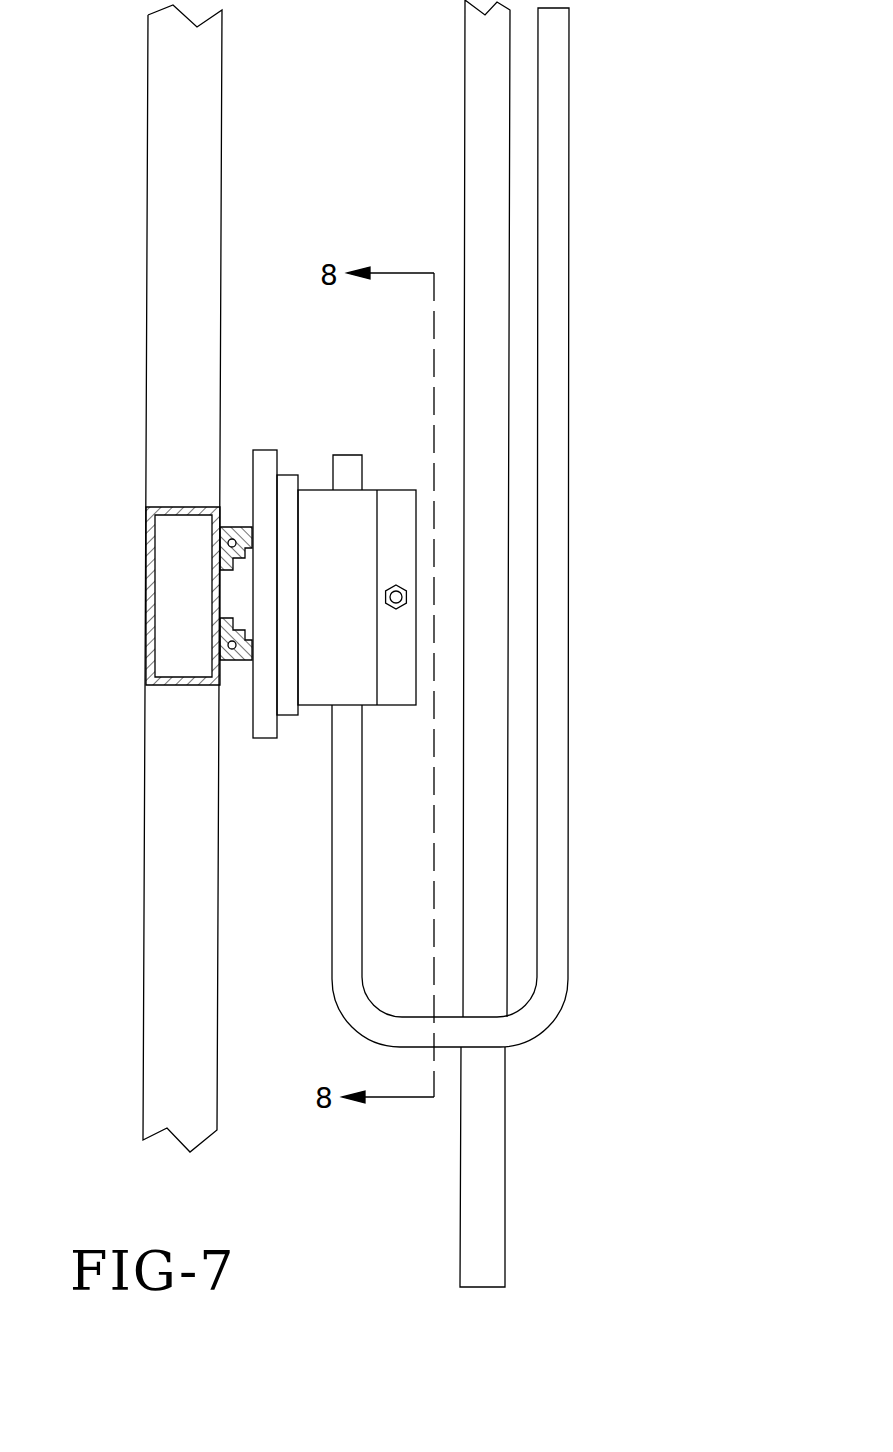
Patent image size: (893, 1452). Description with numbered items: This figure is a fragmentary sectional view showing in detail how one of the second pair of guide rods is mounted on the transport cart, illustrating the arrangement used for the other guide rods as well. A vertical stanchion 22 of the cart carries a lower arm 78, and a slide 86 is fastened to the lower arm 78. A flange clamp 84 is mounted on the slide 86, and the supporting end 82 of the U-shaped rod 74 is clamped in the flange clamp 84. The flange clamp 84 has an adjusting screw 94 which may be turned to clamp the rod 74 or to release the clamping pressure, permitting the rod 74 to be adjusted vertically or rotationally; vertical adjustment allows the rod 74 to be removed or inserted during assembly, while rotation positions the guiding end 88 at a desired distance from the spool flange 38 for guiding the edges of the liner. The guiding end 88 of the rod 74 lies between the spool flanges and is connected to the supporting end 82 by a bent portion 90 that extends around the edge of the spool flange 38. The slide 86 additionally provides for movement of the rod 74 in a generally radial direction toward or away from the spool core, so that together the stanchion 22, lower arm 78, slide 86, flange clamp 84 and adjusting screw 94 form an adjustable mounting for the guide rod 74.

The stanchion 22 is at (147, 292).
The lower arm 78 is at (147, 587).
The slide 86 is at (233, 527).
The flange clamp 84 is at (349, 523).
The adjusting screw 94 is at (406, 587).
The supporting end 82 is at (332, 807).
The bent portion 90 is at (477, 1035).
The guide rod 74 is at (568, 664).
The guiding end 88 is at (557, 340).
The spool flange 38 is at (490, 1210).